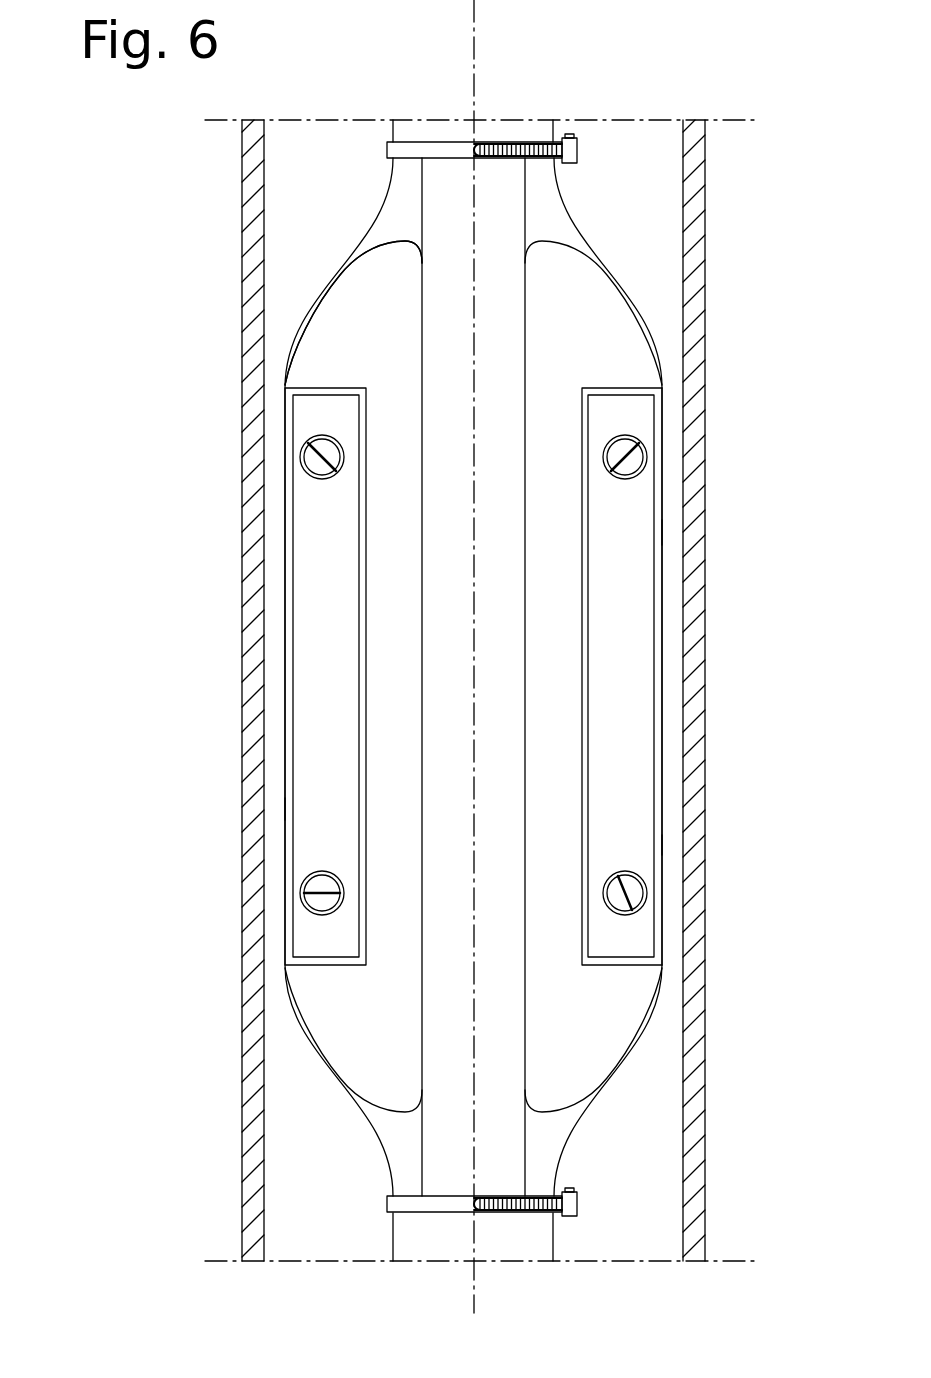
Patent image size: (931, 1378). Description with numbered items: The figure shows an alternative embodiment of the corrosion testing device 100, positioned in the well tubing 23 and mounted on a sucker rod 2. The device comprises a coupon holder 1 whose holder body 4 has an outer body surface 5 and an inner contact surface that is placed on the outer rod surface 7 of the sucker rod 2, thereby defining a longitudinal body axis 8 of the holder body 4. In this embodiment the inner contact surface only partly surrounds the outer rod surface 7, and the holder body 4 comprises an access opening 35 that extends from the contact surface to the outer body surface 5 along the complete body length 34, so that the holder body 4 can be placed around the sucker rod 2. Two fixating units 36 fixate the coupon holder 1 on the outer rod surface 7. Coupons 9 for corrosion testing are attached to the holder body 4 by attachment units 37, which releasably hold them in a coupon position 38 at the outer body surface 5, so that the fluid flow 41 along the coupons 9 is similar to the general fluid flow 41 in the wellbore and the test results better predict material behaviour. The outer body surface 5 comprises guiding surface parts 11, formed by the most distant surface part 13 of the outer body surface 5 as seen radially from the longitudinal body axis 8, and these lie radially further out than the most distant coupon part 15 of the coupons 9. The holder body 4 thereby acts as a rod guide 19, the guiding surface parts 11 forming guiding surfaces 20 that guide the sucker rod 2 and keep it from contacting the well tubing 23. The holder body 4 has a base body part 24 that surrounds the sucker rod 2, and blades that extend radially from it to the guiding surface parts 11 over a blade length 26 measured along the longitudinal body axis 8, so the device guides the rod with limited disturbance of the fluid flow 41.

The corrosion testing device 100 is at (634, 240).
The coupon holder 1 is at (634, 268).
The sucker rod 2 is at (527, 132).
The holder body 4 is at (366, 232).
The outer body surface 5 is at (661, 412).
The outer rod surface 7 is at (381, 139).
The longitudinal body axis 8 is at (474, 76).
The coupons 9 is at (328, 588).
The guiding surface parts 11 is at (668, 656).
The most distant surface part 13 is at (666, 600).
The most distant coupon part 15 is at (659, 755).
The rod guide 19 is at (313, 275).
The guiding surfaces 20 is at (669, 532).
The well tubing 23 is at (240, 450).
The base body part 24 is at (594, 1112).
The blade length 26 is at (421, 1112).
The body length 34 is at (387, 1195).
The access opening 35 is at (479, 815).
The fixating units 36 is at (574, 148).
The attachment units 37 is at (627, 467).
The coupon position 38 is at (320, 842).
The fluid flow 41 is at (314, 145).